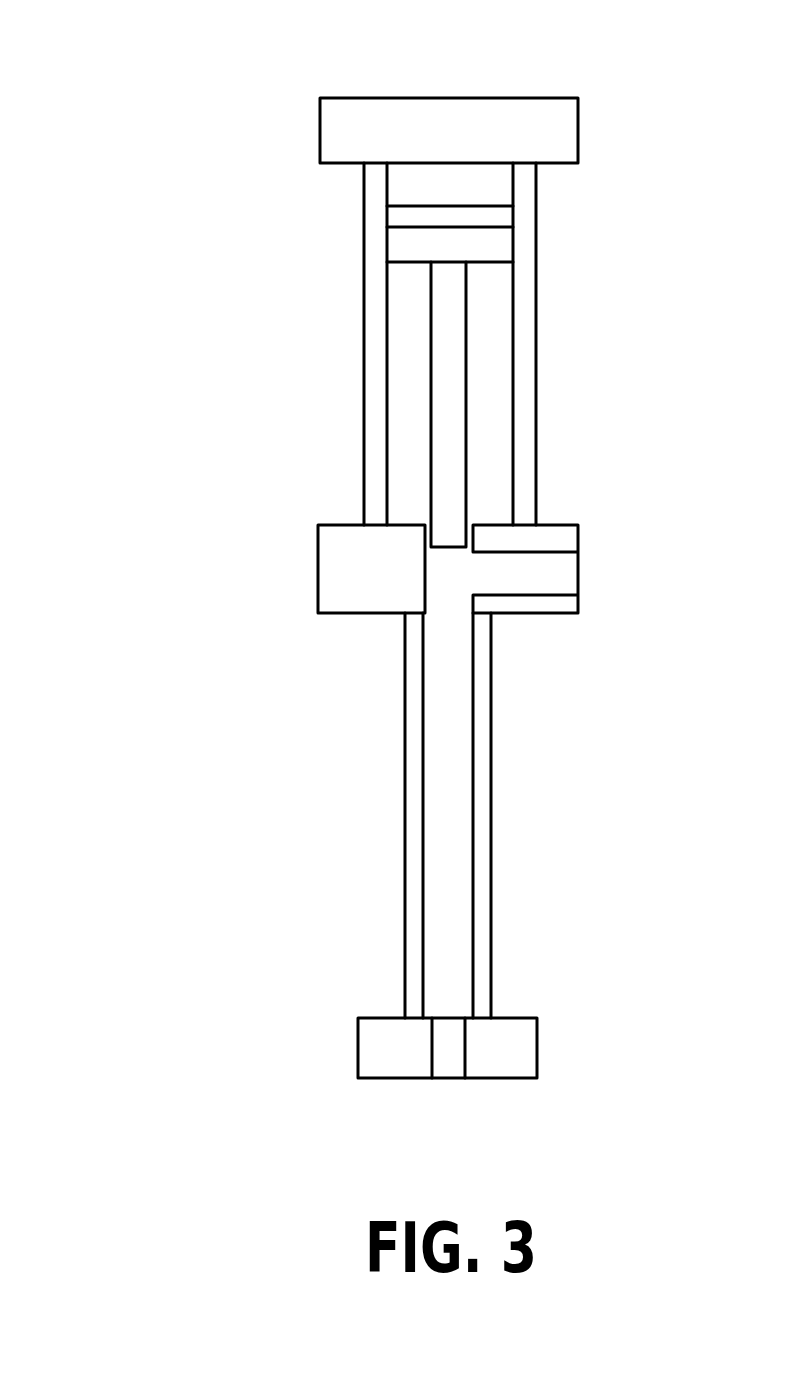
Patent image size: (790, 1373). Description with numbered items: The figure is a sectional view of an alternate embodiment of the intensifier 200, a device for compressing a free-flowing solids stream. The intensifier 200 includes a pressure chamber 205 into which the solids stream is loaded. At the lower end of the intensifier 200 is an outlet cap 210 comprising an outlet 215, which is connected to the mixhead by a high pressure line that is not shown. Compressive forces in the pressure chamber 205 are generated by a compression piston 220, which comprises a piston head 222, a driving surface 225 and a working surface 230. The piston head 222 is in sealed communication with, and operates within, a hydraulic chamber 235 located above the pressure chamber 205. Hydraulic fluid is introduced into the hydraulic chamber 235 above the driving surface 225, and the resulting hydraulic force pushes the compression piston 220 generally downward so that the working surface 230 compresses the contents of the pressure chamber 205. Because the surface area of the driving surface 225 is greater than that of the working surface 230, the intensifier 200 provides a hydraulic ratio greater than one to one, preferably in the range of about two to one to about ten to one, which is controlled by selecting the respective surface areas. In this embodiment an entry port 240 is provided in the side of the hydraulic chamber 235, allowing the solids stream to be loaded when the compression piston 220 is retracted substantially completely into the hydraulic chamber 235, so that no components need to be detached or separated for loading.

The intensifier 200 is at (210, 132).
The pressure chamber 205 is at (442, 747).
The outlet cap 210 is at (375, 1044).
The outlet 215 is at (448, 1054).
The compression piston 220 is at (445, 415).
The piston head 222 is at (407, 241).
The driving surface 225 is at (403, 163).
The working surface 230 is at (450, 550).
The hydraulic chamber 235 is at (520, 380).
The entry port 240 is at (562, 566).